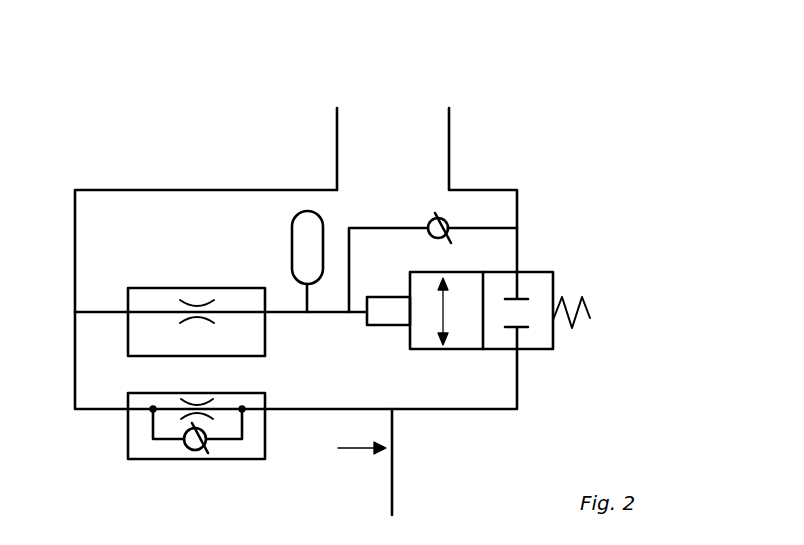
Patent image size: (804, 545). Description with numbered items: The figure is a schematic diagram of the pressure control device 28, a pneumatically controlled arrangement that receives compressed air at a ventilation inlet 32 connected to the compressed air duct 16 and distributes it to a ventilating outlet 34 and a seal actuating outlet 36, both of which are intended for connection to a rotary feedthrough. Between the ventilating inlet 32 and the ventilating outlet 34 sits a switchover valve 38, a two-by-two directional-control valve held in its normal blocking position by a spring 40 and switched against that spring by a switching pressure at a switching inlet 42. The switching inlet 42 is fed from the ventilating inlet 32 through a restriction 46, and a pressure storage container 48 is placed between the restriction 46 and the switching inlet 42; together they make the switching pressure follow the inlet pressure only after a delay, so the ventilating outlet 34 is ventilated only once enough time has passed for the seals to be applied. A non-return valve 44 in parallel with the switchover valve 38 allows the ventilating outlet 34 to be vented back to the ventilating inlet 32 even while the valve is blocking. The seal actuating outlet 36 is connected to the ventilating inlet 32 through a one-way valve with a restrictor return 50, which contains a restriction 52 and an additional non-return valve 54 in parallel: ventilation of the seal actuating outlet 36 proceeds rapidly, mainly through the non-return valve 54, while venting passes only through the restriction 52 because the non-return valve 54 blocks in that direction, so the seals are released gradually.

The pressure control device 28 is at (470, 93).
The ventilating outlet 34 is at (452, 127).
The seal actuating outlet 36 is at (340, 127).
The compressed air duct 16 is at (395, 473).
The ventilation inlet 32 is at (343, 448).
The pressure storage container 48 is at (303, 245).
The restriction 46 is at (251, 347).
The switching inlet 42 is at (353, 317).
The non-return valve 44 is at (449, 225).
The switchover valve 38 is at (540, 352).
The spring 40 is at (590, 300).
The one-way valve with a restrictor return 50 is at (216, 423).
The restriction 52 is at (200, 405).
The non-return valve 54 is at (190, 446).